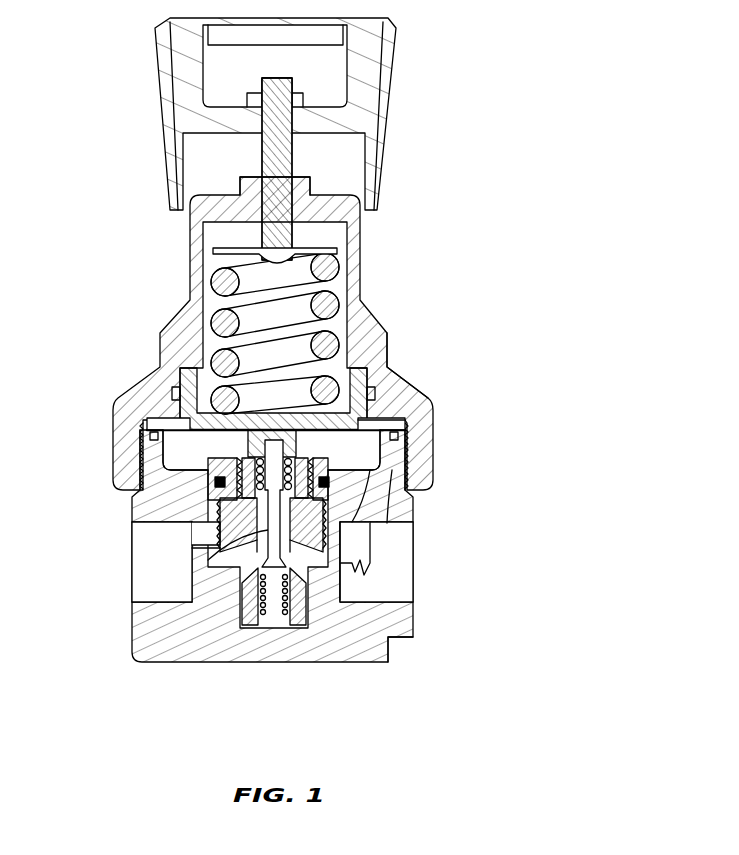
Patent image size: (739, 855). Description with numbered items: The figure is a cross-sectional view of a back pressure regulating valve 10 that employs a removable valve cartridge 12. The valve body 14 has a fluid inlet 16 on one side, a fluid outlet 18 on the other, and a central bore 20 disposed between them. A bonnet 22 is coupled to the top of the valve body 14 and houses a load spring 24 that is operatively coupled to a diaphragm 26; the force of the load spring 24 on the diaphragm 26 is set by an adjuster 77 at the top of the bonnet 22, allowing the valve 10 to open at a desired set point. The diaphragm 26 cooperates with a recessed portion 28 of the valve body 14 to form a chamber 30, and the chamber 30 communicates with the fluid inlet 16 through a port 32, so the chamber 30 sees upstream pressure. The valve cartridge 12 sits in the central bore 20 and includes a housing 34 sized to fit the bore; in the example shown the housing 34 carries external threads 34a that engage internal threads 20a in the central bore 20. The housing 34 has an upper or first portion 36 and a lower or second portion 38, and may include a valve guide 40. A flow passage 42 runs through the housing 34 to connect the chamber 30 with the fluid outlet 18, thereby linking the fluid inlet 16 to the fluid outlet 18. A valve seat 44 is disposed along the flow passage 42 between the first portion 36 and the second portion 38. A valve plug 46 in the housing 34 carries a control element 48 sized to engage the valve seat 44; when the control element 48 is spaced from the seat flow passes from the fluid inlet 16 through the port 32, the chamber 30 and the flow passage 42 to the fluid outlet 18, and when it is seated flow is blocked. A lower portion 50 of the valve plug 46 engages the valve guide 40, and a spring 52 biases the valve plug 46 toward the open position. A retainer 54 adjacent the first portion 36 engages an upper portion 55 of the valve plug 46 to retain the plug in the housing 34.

The back pressure regulating valve 10 is at (432, 296).
The valve cartridge 12 is at (334, 502).
The valve body 14 is at (352, 663).
The fluid inlet 16 is at (400, 578).
The fluid outlet 18 is at (147, 580).
The central bore 20 is at (235, 514).
The internal threads 20a is at (398, 546).
The bonnet 22 is at (418, 388).
The load spring 24 is at (332, 307).
The diaphragm 26 is at (178, 447).
The recessed portion 28 is at (135, 470).
The chamber 30 is at (182, 454).
The port 32 is at (386, 510).
The housing 34 is at (217, 534).
The external threads 34a is at (220, 545).
The first portion 36 is at (365, 460).
The second portion 38 is at (388, 645).
The valve guide 40 is at (244, 604).
The flow passage 42 is at (258, 553).
The valve seat 44 is at (210, 492).
The valve plug 46 is at (292, 553).
The control element 48 is at (215, 374).
The lower portion 50 is at (264, 600).
The spring 52 is at (272, 600).
The retainer 54 is at (347, 400).
The upper portion 55 is at (289, 426).
The adjuster 77 is at (373, 80).